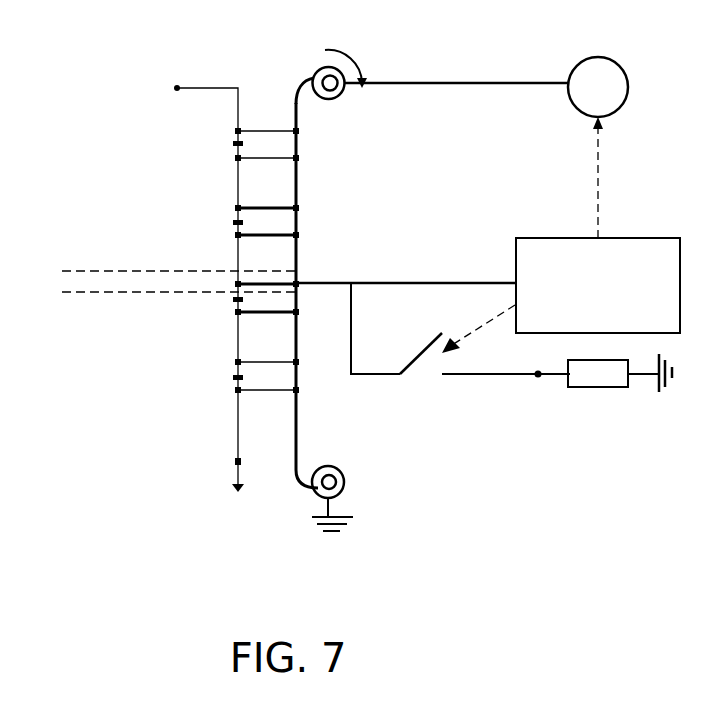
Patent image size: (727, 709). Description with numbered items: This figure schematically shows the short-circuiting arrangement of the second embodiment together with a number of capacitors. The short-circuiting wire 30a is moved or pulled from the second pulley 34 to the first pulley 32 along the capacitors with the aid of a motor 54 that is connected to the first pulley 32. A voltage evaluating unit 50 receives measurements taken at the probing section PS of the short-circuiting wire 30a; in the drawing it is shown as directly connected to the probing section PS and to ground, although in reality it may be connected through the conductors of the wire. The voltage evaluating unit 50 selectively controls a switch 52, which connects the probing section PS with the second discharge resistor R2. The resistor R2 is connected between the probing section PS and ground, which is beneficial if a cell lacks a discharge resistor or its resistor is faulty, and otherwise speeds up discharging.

The short-circuiting wire 30a is at (297, 222).
The first pulley 32 is at (359, 60).
The second pulley 34 is at (350, 498).
The voltage evaluating unit 50 is at (598, 285).
The switch 52 is at (481, 363).
The motor 54 is at (598, 127).
The second discharge resistor R2 is at (619, 391).
The probing section PS is at (153, 288).